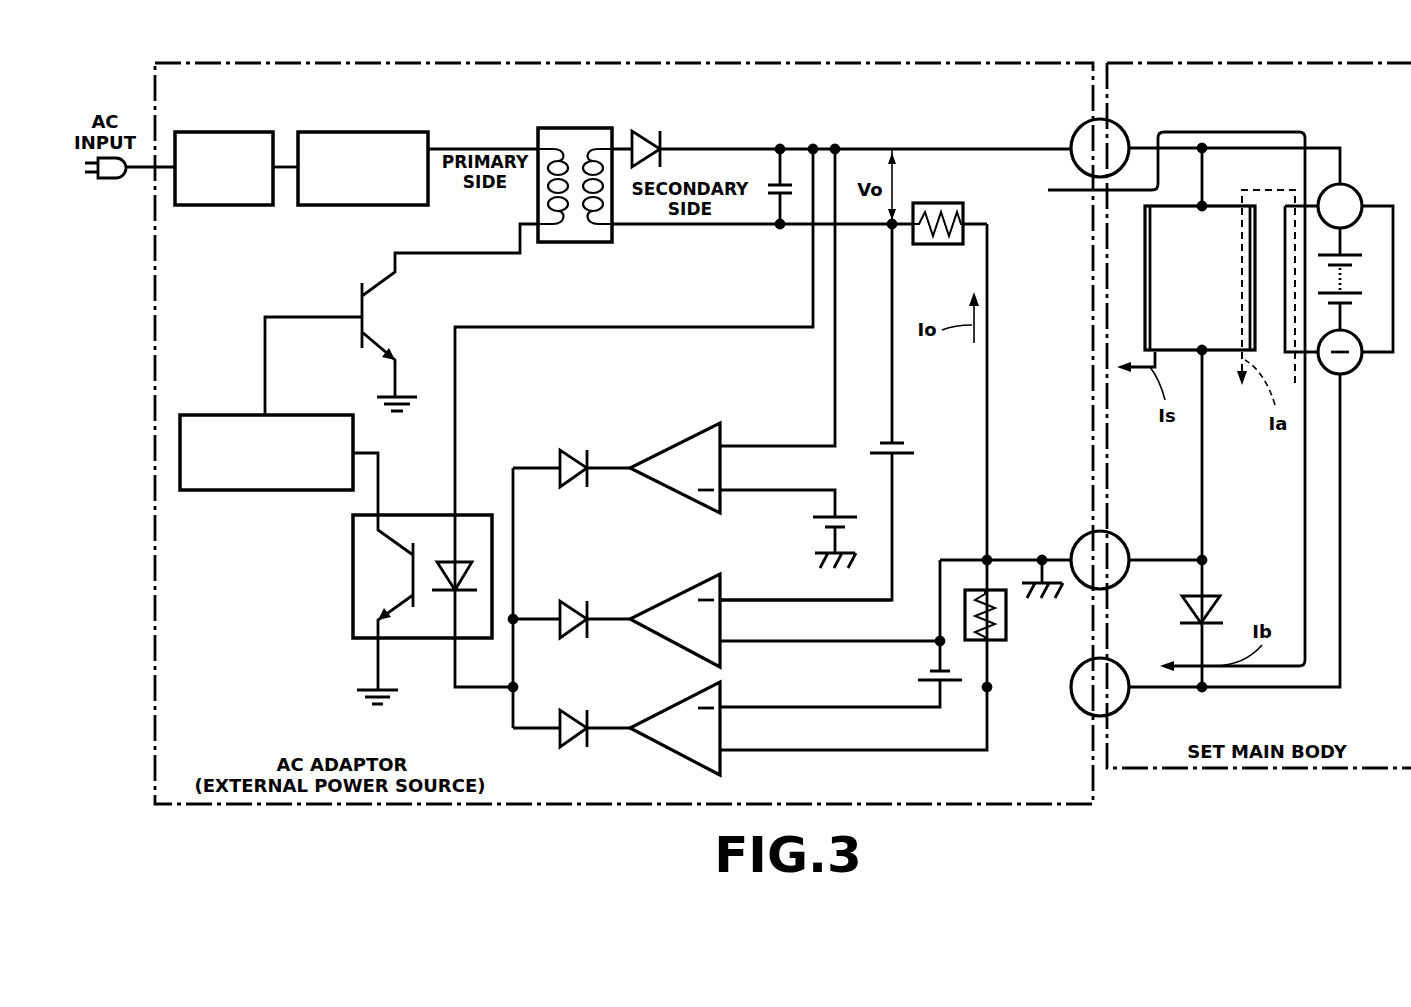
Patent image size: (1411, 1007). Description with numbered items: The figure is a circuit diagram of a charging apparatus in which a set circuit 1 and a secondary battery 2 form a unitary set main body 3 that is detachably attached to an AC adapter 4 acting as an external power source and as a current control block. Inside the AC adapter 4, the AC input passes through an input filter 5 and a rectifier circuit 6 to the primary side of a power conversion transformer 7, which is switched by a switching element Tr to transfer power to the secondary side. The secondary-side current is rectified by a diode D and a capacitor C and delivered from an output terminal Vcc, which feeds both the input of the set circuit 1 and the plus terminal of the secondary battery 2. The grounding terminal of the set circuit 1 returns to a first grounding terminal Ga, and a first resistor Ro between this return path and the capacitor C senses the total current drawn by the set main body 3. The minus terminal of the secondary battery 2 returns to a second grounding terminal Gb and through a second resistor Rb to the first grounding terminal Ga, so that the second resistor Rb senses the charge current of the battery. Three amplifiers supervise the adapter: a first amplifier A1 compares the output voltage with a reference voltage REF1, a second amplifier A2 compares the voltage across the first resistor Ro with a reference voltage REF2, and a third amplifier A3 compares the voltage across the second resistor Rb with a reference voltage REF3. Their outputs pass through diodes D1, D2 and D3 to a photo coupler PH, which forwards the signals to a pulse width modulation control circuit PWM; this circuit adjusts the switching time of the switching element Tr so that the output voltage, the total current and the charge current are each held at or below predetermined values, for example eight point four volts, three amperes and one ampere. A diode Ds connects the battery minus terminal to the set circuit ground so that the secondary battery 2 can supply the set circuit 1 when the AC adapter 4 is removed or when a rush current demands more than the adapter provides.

The set circuit 1 is at (1218, 352).
The secondary battery 2 is at (1378, 206).
The set main body 3 is at (1235, 63).
The AC adapter 4 is at (805, 63).
The input filter 5 is at (225, 132).
The rectifier circuit 6 is at (345, 132).
The power conversion transformer 7 is at (568, 128).
The diode D is at (648, 134).
The capacitor C is at (783, 183).
The switching element Tr is at (375, 335).
The pulse width modulation control circuit PWM is at (260, 490).
The photo coupler PH is at (428, 515).
The first resistor Ro is at (930, 204).
The second resistor Rb is at (1006, 630).
The first amplifier A1 is at (670, 465).
The second amplifier A2 is at (675, 615).
The third amplifier A3 is at (670, 723).
The diode D1 is at (570, 458).
The diode D2 is at (570, 608).
The diode D3 is at (570, 715).
The reference voltage REF1 is at (815, 524).
The reference voltage REF2 is at (905, 448).
The reference voltage REF3 is at (922, 674).
The output terminal Vcc is at (1100, 148).
The first grounding terminal Ga is at (1100, 560).
The second grounding terminal Gb is at (1100, 687).
The diode Ds is at (1215, 608).